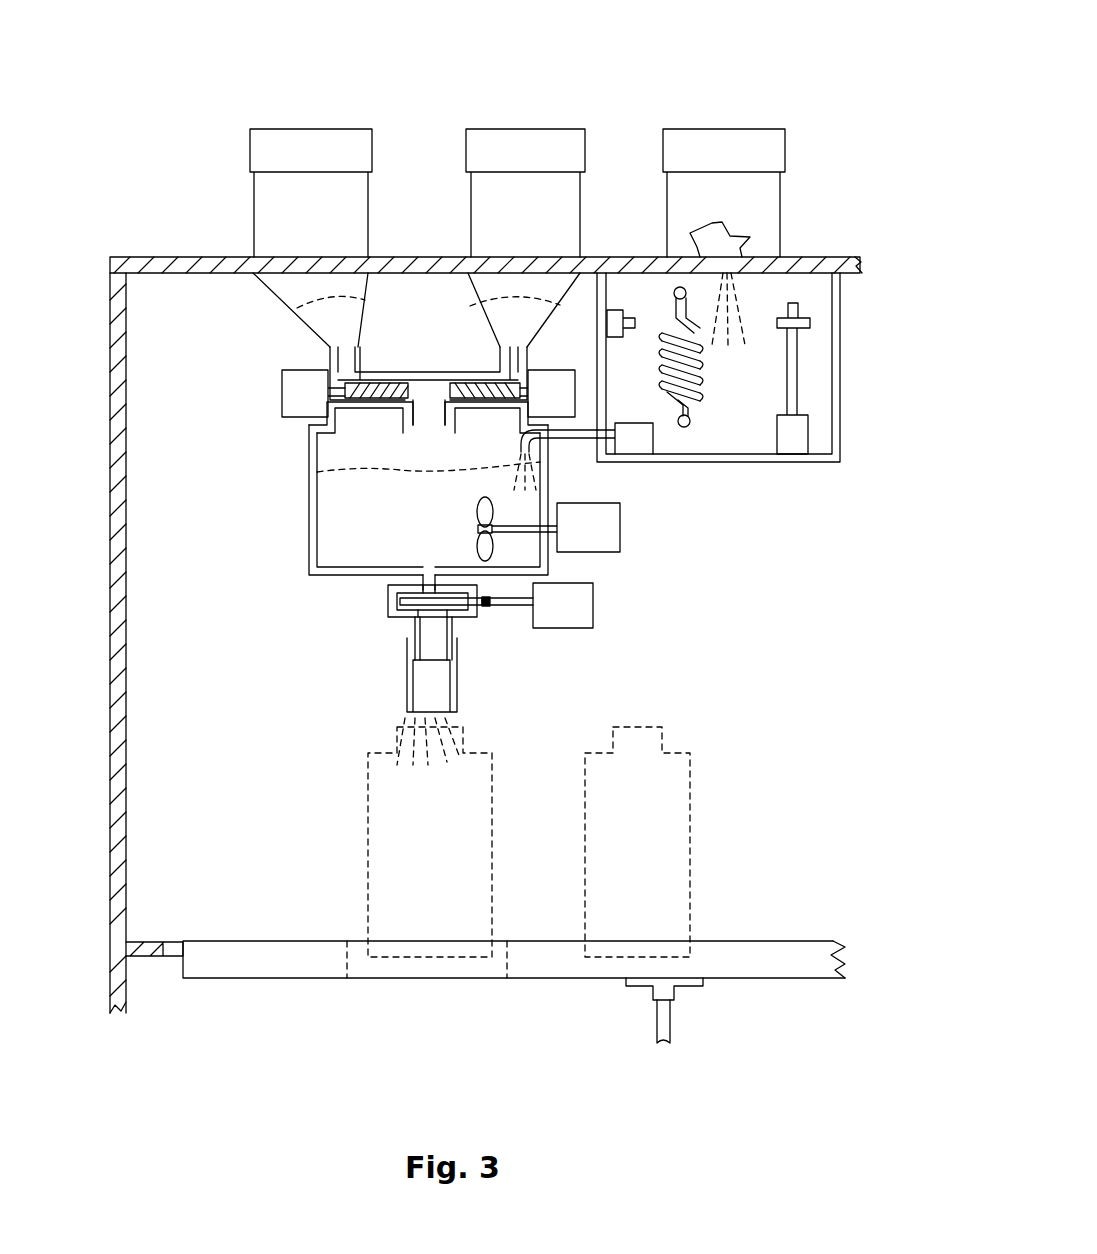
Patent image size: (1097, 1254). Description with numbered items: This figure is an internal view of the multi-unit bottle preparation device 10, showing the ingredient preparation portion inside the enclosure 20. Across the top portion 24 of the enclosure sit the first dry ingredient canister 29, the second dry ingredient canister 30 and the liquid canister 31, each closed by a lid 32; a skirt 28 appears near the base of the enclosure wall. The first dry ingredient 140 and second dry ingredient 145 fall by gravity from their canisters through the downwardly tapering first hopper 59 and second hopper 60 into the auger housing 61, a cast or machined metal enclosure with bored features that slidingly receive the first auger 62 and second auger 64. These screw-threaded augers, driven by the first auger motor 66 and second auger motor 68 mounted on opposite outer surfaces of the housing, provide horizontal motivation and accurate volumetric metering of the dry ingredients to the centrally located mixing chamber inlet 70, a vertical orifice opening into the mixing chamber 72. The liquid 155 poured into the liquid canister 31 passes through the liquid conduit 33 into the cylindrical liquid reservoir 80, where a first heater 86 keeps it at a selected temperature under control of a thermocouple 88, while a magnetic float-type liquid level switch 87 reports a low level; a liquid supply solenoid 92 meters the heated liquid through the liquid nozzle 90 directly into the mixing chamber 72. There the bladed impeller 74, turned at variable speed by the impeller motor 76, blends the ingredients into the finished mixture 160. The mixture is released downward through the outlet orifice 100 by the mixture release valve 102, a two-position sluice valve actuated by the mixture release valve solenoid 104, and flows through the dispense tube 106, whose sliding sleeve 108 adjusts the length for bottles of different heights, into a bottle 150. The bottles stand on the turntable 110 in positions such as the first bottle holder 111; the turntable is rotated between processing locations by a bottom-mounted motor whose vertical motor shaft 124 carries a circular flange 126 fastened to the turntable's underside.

The multi-unit bottle preparation device 10 is at (805, 103).
The enclosure 20 is at (110, 400).
The top portion 24 is at (167, 262).
The skirt 28 is at (150, 957).
The first dry ingredient canister 29 is at (285, 220).
The second dry ingredient canister 30 is at (557, 222).
The liquid canister 31 is at (697, 208).
The lid 32 is at (483, 145).
The liquid conduit 33 is at (742, 262).
The first hopper 59 is at (355, 283).
The second hopper 60 is at (490, 292).
The auger housing 61 is at (330, 360).
The first auger 62 is at (371, 390).
The second auger 64 is at (507, 380).
The first auger motor 66 is at (305, 393).
The second auger motor 68 is at (560, 388).
The mixing chamber inlet 70 is at (418, 423).
The mixing chamber 72 is at (389, 635).
The impeller 74 is at (482, 516).
The impeller motor 76 is at (600, 520).
The liquid reservoir 80 is at (698, 462).
The first heater 86 is at (655, 342).
The liquid level switch 87 is at (790, 432).
The thermocouple 88 is at (623, 316).
The liquid nozzle 90 is at (566, 442).
The liquid supply solenoid 92 is at (637, 440).
The outlet orifice 100 is at (437, 575).
The mixture release valve 102 is at (440, 602).
The mixture release valve solenoid 104 is at (583, 608).
The dispense tube 106 is at (435, 640).
The sleeve 108 is at (403, 680).
The turntable 110 is at (514, 941).
The first bottle holder 111 is at (345, 968).
The motor shaft 124 is at (665, 1027).
The flange 126 is at (668, 988).
The first dry ingredient 140 is at (318, 303).
The second dry ingredient 145 is at (518, 297).
The bottle 150 is at (605, 765).
The liquid 155 is at (510, 482).
The mixture 160 is at (373, 470).